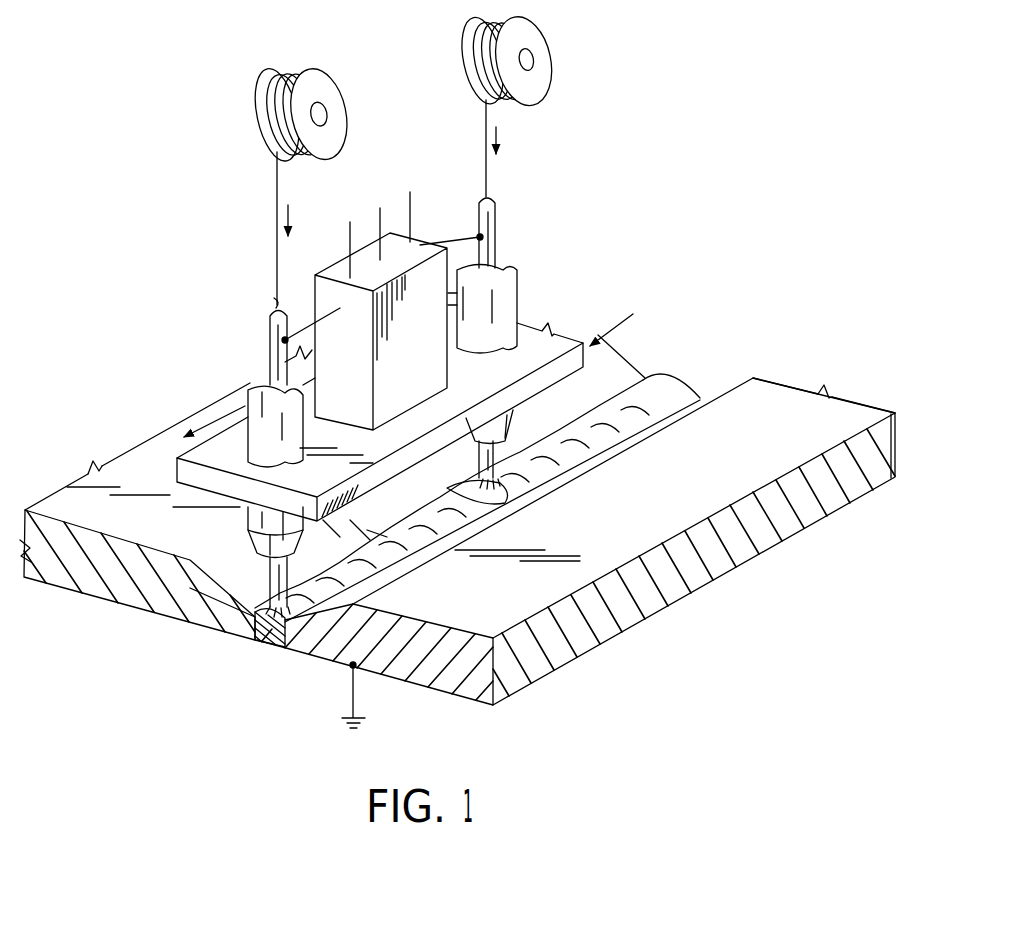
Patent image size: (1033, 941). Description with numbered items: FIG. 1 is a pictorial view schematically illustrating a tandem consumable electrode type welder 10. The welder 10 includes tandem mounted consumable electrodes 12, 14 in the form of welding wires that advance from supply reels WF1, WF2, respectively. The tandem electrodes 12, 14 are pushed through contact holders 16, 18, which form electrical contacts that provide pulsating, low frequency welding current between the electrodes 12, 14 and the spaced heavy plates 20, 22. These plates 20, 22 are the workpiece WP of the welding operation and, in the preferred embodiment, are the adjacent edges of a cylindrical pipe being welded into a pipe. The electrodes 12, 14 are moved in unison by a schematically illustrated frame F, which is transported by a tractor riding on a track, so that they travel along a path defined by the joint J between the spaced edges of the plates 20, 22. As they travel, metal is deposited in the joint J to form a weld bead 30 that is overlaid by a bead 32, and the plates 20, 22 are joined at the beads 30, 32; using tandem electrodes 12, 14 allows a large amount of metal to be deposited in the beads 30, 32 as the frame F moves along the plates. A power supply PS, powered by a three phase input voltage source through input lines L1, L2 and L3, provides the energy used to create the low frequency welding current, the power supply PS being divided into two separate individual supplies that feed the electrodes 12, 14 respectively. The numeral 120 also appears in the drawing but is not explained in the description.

The welder 10 is at (552, 290).
The consumable electrode 12 is at (267, 328).
The consumable electrode 14 is at (488, 210).
The contact holder 16 is at (260, 410).
The contact holder 18 is at (507, 298).
The plate 20 is at (138, 590).
The plate 22 is at (432, 672).
The weld bead 30 is at (265, 645).
The bead 32 is at (672, 387).
The wire contact point 120 is at (480, 237).
The supply reel WF1 is at (327, 85).
The supply reel WF2 is at (540, 43).
The input line L1 is at (345, 238).
The input line L2 is at (378, 219).
The input line L3 is at (408, 200).
The power supply PS is at (431, 367).
The frame F is at (620, 322).
The joint J is at (668, 359).
The workpiece WP is at (582, 662).